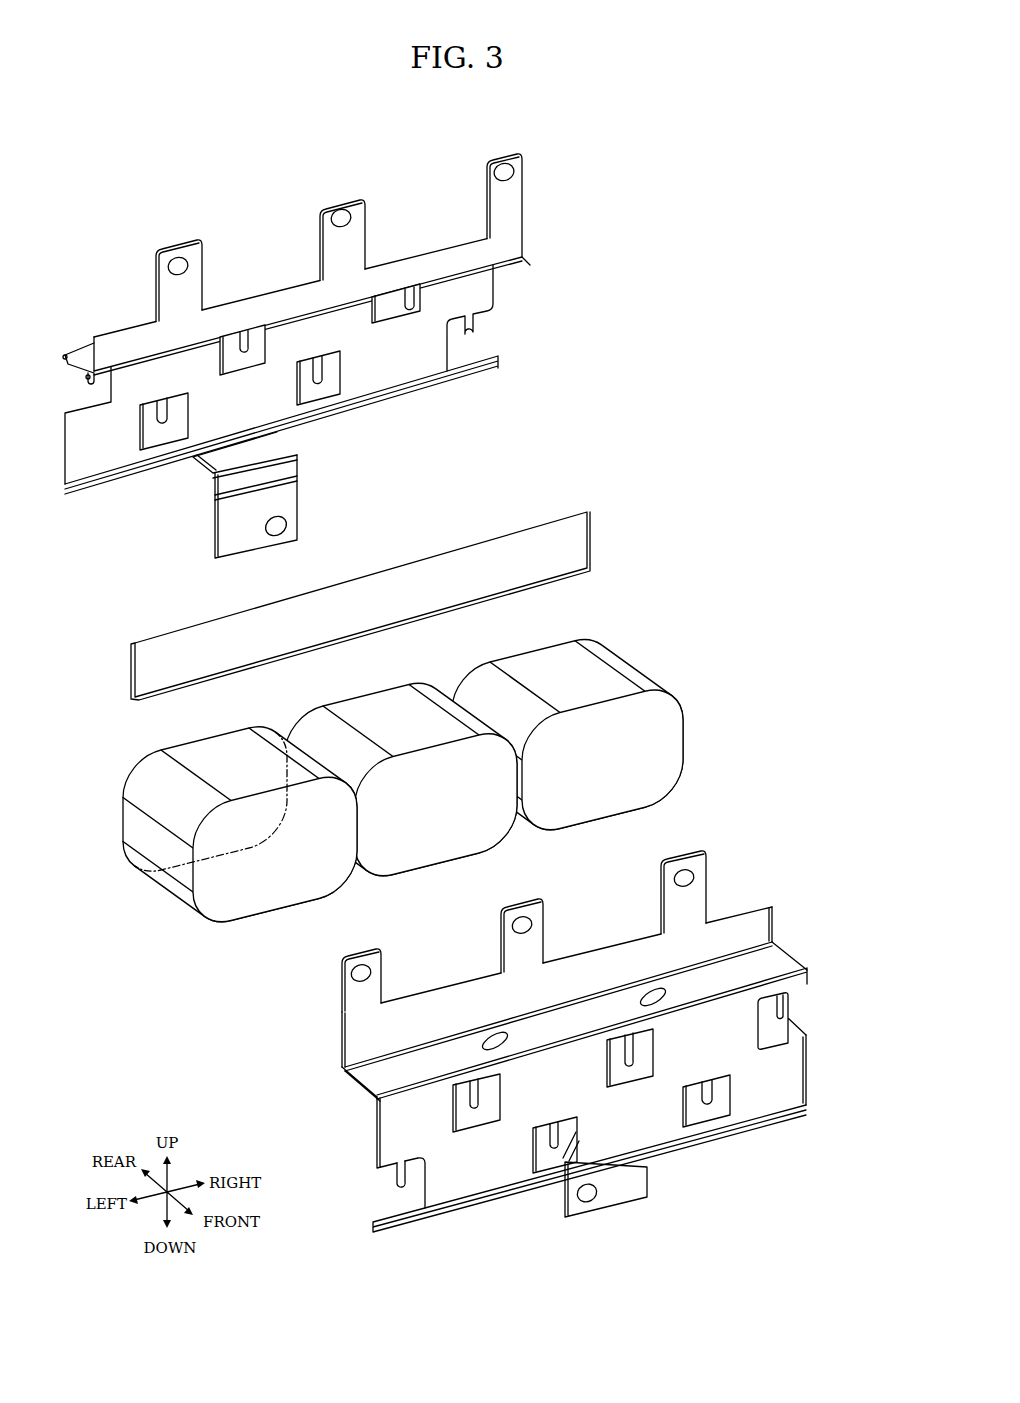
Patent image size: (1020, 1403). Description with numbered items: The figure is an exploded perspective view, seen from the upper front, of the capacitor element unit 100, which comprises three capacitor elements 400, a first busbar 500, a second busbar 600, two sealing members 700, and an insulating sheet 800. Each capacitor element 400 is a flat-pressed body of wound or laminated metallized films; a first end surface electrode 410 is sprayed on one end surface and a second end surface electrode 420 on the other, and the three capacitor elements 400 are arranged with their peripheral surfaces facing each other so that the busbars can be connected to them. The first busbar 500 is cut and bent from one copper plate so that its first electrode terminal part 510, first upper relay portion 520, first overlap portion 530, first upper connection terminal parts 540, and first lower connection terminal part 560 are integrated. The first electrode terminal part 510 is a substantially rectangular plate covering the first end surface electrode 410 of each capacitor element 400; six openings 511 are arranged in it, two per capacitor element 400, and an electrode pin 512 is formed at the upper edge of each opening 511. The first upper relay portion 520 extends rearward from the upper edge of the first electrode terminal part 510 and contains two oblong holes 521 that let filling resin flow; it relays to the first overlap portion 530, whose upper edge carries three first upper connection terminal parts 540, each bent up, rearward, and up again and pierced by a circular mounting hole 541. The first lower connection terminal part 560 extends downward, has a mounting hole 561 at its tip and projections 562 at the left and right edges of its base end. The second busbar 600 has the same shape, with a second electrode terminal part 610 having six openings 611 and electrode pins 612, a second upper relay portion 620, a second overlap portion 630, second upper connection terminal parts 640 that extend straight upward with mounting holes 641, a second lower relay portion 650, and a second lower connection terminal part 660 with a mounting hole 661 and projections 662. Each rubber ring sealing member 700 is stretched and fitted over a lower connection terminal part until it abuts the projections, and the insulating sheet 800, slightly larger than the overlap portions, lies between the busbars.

The capacitor element unit 100 is at (684, 261).
The capacitor element 400 is at (650, 660).
The first end surface electrode 410 is at (232, 913).
The second end surface electrode 420 is at (160, 780).
The first busbar 500 is at (765, 905).
The first electrode terminal part 510 is at (748, 1112).
The opening 511 is at (752, 1068).
The electrode pin 512 is at (778, 1012).
The first upper relay portion 520 is at (780, 952).
The oblong hole 521 is at (648, 990).
The first overlap portion 530 is at (375, 1048).
The first upper connection terminal part 540 is at (707, 865).
The mounting hole 541 is at (678, 880).
The first lower connection terminal part 560 is at (630, 1203).
The mounting hole 561 is at (590, 1202).
The projection 562 is at (550, 1160).
The second busbar 600 is at (540, 240).
The second electrode terminal part 610 is at (395, 420).
The opening 611 is at (362, 302).
The electrode pin 612 is at (420, 298).
The second upper relay portion 620 is at (87, 346).
The second overlap portion 630 is at (507, 250).
The second upper connection terminal part 640 is at (528, 182).
The mounting hole 641 is at (492, 168).
The second lower relay portion 650 is at (92, 492).
The second lower connection terminal part 660 is at (215, 525).
The mounting hole 661 is at (275, 537).
The projection 662 is at (203, 470).
The sealing member 700 is at (292, 512).
The insulating sheet 800 is at (591, 535).